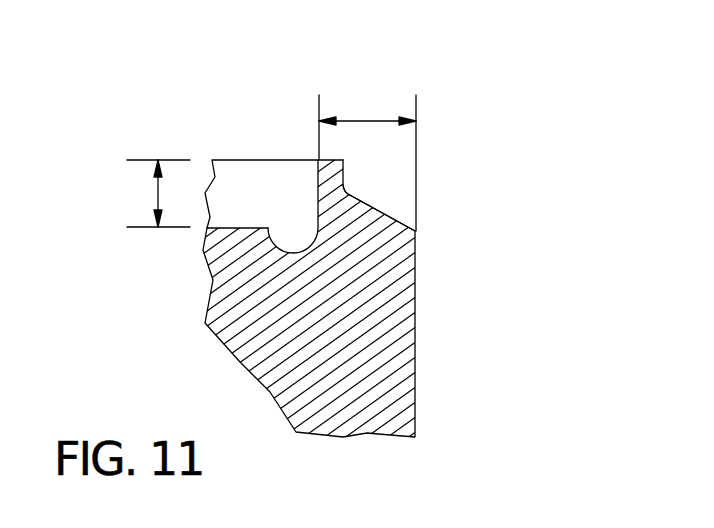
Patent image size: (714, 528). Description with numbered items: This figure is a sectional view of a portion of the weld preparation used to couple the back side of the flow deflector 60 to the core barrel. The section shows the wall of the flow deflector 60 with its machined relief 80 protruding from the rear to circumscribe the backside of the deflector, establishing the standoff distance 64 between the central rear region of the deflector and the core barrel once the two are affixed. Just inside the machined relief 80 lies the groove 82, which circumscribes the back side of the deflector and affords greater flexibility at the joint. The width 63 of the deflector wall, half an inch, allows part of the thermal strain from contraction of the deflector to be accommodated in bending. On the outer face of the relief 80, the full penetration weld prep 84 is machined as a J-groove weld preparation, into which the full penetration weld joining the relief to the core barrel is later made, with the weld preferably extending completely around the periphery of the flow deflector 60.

The flow deflector 60 is at (415, 348).
The width 63 is at (357, 120).
The standoff distance 64 is at (152, 200).
The machined relief 80 is at (303, 187).
The groove 82 is at (296, 240).
The full penetration weld prep 84 is at (373, 207).